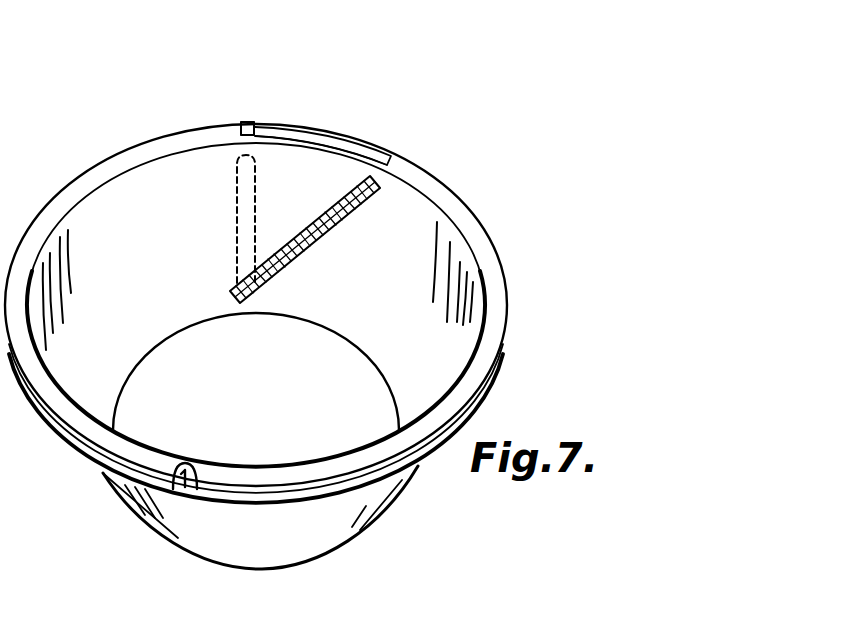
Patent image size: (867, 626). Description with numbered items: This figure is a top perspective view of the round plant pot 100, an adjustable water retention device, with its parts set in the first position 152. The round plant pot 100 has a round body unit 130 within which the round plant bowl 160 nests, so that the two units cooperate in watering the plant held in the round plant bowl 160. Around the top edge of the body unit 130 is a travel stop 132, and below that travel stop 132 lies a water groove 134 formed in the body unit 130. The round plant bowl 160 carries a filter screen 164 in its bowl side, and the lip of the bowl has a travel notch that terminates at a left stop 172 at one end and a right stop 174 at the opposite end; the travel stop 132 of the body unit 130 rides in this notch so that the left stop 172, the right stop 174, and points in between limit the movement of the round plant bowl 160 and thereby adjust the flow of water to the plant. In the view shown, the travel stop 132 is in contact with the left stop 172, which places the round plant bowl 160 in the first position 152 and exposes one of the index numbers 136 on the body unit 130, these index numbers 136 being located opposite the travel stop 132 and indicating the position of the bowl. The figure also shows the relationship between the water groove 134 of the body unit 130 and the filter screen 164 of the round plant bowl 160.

The round plant pot 100 is at (187, 63).
The round body unit 130 is at (449, 482).
The travel stop 132 is at (500, 624).
The water groove 134 is at (237, 215).
The index numbers 136 is at (178, 482).
The first position 152 is at (136, 537).
The round plant bowl 160 is at (484, 183).
The filter screen 164 is at (318, 228).
The left stop 172 is at (247, 120).
The right stop 174 is at (392, 373).